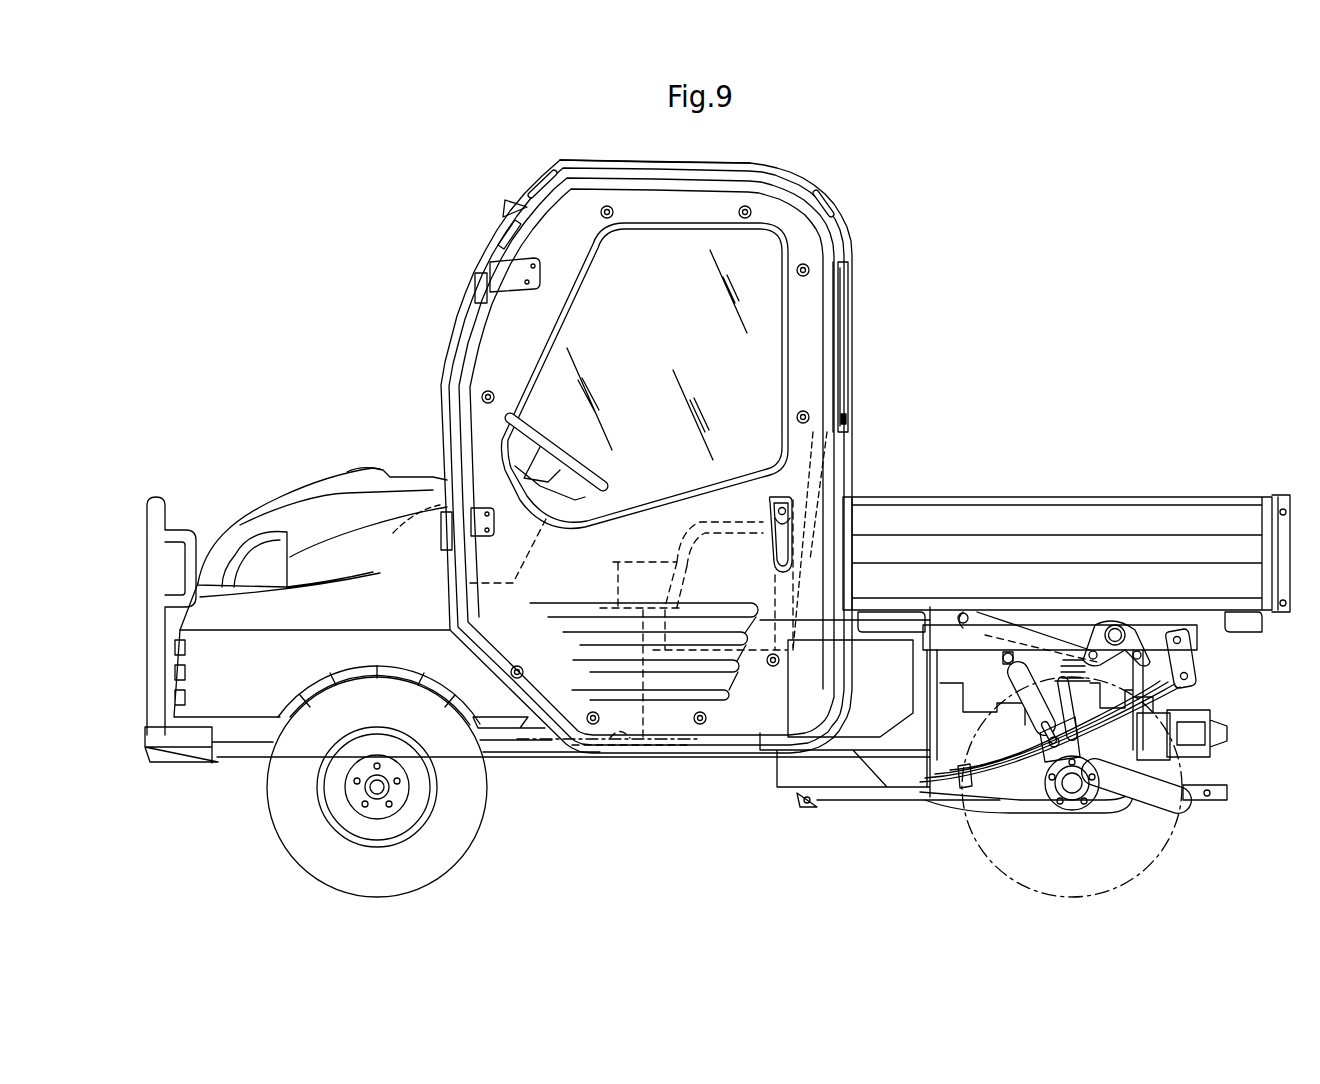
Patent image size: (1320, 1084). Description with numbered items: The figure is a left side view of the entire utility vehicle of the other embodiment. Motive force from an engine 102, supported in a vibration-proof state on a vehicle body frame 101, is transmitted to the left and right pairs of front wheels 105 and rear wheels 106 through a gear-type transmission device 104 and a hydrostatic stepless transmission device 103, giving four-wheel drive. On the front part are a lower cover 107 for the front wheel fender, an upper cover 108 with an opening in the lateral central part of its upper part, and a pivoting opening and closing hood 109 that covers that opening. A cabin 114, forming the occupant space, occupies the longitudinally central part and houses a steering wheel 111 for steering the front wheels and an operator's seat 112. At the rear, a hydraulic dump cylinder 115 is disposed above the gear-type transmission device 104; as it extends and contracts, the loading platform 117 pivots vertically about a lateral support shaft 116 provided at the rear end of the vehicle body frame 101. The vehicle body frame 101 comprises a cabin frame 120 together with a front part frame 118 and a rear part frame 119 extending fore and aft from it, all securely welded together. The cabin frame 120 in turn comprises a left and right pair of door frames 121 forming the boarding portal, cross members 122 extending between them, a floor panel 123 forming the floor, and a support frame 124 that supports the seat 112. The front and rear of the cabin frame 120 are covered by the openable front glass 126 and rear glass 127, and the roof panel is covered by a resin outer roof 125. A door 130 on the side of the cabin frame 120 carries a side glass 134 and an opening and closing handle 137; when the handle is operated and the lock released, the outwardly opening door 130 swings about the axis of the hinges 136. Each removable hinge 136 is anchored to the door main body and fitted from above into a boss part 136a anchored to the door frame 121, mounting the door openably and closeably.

The vehicle body frame 101 is at (733, 757).
The engine 102 is at (935, 655).
The hydrostatic stepless transmission device 103 is at (1227, 735).
The gear-type transmission device 104 is at (1010, 790).
The front wheels 105 is at (277, 822).
The rear wheels 106 is at (1160, 820).
The lower cover 107 is at (230, 720).
The upper cover 108 is at (353, 510).
The hood 109 is at (245, 518).
The steering wheel 111 is at (548, 432).
The operator's seat 112 is at (620, 560).
The cabin 114 is at (838, 183).
The hydraulic dump cylinder 115 is at (995, 615).
The lateral support shaft 116 is at (1190, 620).
The loading platform 117 is at (1045, 497).
The front part frame 118 is at (510, 757).
The rear part frame 119 is at (1195, 640).
The cabin frame 120 is at (838, 318).
The door frames 121 is at (808, 660).
The cross members 122 is at (440, 512).
The floor panel 123 is at (618, 745).
The support frame 124 is at (650, 684).
The outer roof 125 is at (628, 160).
The front glass 126 is at (447, 385).
The rear glass 127 is at (848, 385).
The door 130 is at (505, 340).
The side glass 134 is at (643, 458).
The hinge 136 is at (523, 287).
The boss part 136a is at (482, 292).
The opening and closing handle 137 is at (770, 545).